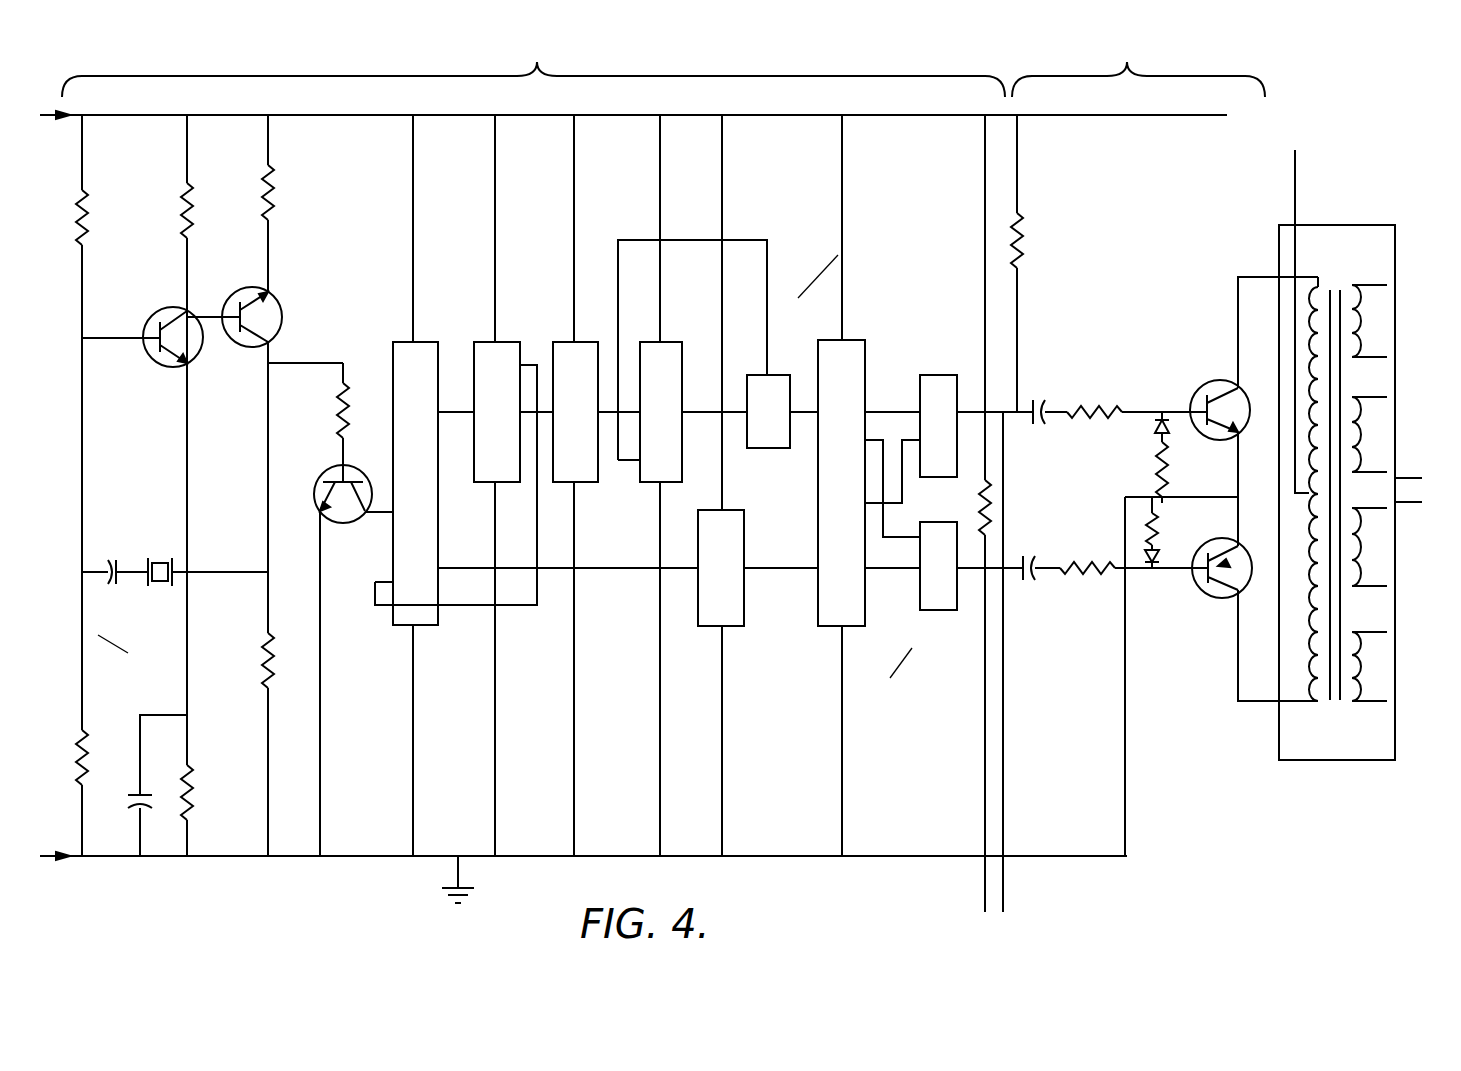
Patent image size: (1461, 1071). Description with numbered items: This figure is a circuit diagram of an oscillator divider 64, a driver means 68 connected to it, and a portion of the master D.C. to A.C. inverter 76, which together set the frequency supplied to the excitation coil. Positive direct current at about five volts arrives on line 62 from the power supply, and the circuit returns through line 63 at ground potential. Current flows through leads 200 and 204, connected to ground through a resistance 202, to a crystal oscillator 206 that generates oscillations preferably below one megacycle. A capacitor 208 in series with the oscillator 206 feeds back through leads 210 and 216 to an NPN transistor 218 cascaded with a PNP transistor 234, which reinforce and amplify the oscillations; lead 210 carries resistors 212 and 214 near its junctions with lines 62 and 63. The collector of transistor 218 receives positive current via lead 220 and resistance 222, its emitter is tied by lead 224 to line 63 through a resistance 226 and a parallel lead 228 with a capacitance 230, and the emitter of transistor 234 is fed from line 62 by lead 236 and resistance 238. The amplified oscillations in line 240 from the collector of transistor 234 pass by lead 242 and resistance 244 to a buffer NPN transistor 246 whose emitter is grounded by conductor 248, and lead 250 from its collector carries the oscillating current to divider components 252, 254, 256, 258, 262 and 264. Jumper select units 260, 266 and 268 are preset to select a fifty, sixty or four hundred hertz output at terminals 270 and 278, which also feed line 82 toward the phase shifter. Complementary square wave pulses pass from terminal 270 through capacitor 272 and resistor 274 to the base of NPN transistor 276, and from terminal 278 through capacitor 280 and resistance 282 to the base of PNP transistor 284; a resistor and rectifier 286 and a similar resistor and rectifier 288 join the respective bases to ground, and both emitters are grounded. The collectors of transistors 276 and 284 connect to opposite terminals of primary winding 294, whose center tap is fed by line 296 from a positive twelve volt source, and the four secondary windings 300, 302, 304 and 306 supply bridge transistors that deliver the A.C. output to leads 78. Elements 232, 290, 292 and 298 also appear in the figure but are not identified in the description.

The line 62 is at (75, 110).
The line 63 is at (62, 858).
The oscillator divider 64 is at (533, 65).
The driver means 68 is at (1138, 65).
The master D.C. to A.C. inverter 76 is at (1320, 225).
The leads 78 is at (1410, 490).
The line 82 is at (985, 885).
The lead 200 is at (265, 620).
The resistance 202 is at (262, 672).
The lead 204 is at (242, 568).
The crystal oscillator 206 is at (165, 588).
The capacitor 208 is at (118, 560).
The lead 210 is at (82, 462).
The resistor 212 is at (74, 752).
The resistor 214 is at (90, 238).
The lead 216 is at (125, 350).
The NPN transistor 218 is at (160, 318).
The lead 220 is at (192, 252).
The resistance 222 is at (193, 215).
The lead 224 is at (190, 457).
The resistance 226 is at (192, 792).
The parallel lead 228 is at (132, 750).
The capacitance 230 is at (130, 810).
The conductor 232 is at (212, 322).
The PNP transistor 234 is at (280, 308).
The lead 236 is at (270, 262).
The resistance 238 is at (276, 197).
The line 240 is at (278, 363).
The lead 242 is at (310, 376).
The resistance 244 is at (338, 420).
The buffer NPN transistor 246 is at (325, 490).
The conductor 248 is at (326, 748).
The lead 250 is at (383, 518).
The divider component 252 is at (398, 338).
The divider component 254 is at (478, 338).
The divider component 256 is at (560, 338).
The divider component 258 is at (640, 485).
The jumper select unit 260 is at (775, 372).
The divider component 262 is at (850, 340).
The divider component 264 is at (742, 622).
The jumper select unit 266 is at (945, 372).
The jumper select unit 268 is at (925, 606).
The output terminal 270 is at (1035, 398).
The capacitor 272 is at (1078, 390).
The resistor 274 is at (1097, 420).
The NPN transistor 276 is at (1213, 380).
The output terminal 278 is at (1012, 590).
The capacitor 280 is at (1028, 556).
The resistance 282 is at (1090, 580).
The PNP transistor 284 is at (1205, 592).
The resistor and rectifier 286 is at (1155, 426).
The resistor and rectifier 288 is at (1188, 545).
The conductor 290 is at (1250, 260).
The primary winding 292 is at (1257, 704).
The primary winding 294 is at (1310, 612).
The line 296 is at (1296, 503).
The transformer core 298 is at (1336, 702).
The secondary winding 300 is at (1368, 320).
The secondary winding 302 is at (1368, 435).
The secondary winding 304 is at (1368, 545).
The secondary winding 306 is at (1368, 668).